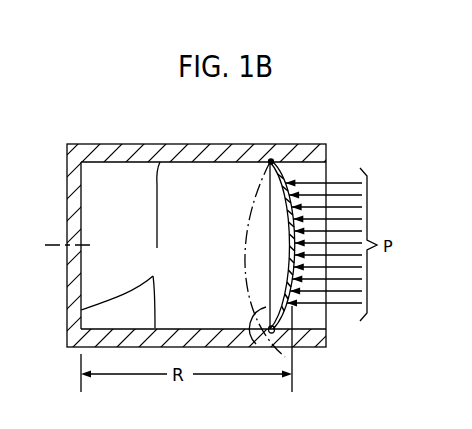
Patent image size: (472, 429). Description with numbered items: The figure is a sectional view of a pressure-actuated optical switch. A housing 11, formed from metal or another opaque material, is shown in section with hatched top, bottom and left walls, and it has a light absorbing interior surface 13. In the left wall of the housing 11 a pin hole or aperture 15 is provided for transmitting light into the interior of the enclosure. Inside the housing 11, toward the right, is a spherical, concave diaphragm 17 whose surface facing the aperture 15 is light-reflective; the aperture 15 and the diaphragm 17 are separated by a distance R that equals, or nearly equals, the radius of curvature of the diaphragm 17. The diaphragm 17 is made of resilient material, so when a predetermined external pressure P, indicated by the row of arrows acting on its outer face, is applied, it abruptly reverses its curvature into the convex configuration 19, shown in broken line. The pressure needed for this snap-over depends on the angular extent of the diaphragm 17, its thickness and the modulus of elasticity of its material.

The housing 11 is at (297, 130).
The light absorbing interior surface 13 is at (120, 245).
The aperture 15 is at (73, 249).
The diaphragm 17 is at (280, 170).
The convex configuration 19 is at (285, 357).